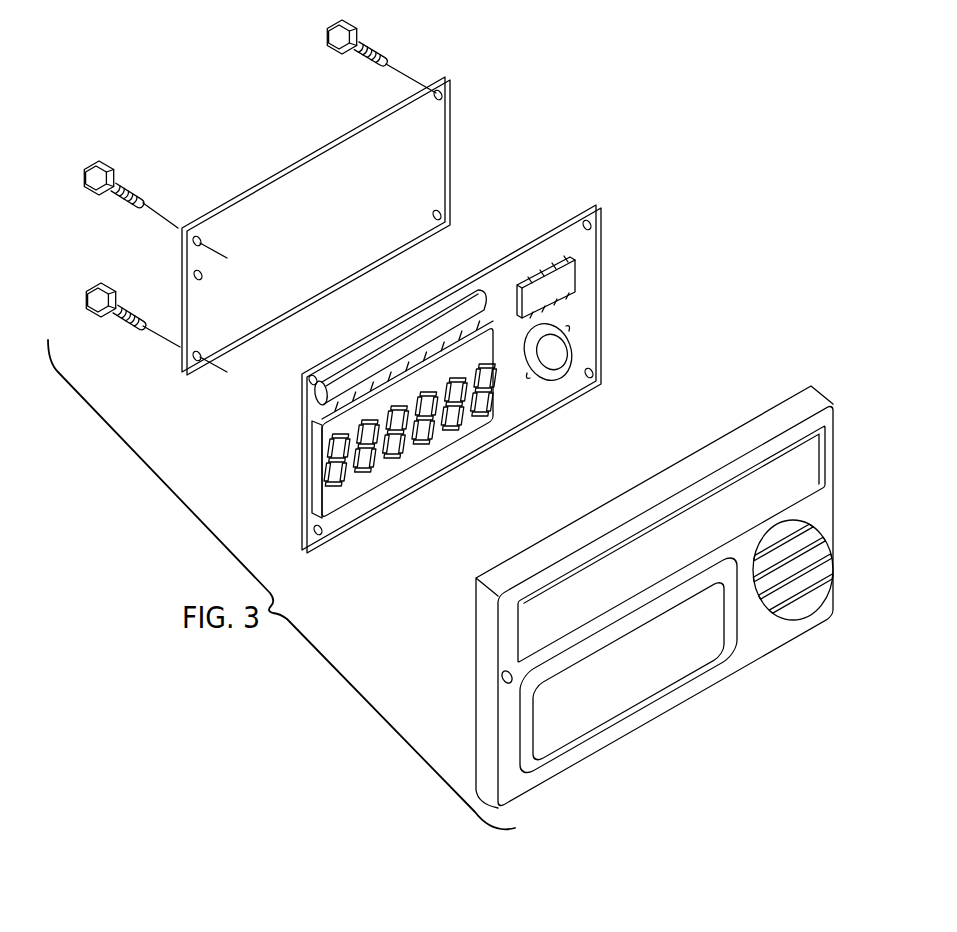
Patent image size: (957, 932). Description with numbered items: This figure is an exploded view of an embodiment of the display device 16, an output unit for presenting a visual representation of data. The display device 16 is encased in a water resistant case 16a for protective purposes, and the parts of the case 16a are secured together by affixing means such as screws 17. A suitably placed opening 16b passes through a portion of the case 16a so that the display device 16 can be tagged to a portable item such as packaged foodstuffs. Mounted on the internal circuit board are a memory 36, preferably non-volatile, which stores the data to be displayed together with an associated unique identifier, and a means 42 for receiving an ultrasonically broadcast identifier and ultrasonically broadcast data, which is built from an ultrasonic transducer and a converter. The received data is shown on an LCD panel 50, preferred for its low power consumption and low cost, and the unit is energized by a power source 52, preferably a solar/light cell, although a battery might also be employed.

The display device 16 is at (747, 193).
The water resistant case 16a is at (450, 146).
The opening 16b is at (498, 680).
The screws 17 is at (131, 187).
The memory 36 is at (567, 283).
The means for receiving an ultrasonically broadcast identifier and ultrasonically br 42 is at (558, 352).
The LCD panel 50 is at (346, 490).
The power source 52 is at (353, 365).